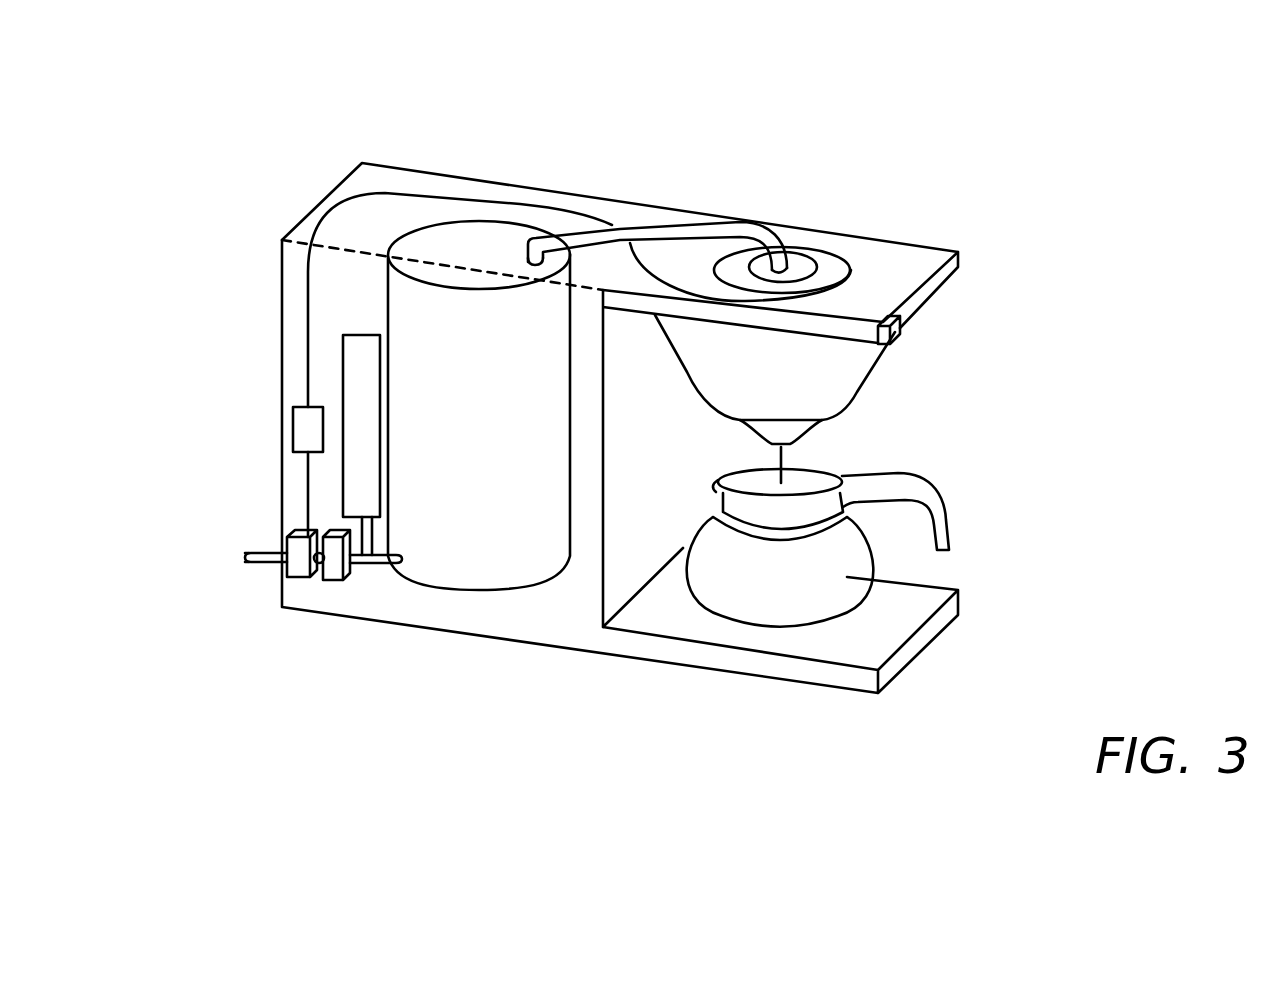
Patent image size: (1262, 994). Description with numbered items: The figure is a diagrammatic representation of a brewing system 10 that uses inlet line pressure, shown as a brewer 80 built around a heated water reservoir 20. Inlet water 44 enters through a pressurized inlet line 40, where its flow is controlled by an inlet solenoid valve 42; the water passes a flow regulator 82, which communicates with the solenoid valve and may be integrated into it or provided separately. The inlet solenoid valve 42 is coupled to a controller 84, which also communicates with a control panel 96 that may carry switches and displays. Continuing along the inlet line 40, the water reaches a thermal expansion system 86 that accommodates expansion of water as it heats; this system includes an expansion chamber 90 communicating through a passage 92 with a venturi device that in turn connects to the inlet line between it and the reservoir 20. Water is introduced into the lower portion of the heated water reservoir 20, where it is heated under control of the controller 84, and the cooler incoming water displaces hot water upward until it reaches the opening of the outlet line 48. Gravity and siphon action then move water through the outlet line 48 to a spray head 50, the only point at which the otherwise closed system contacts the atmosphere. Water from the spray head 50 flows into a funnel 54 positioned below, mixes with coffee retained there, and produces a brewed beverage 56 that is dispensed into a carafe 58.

The brewing system 10 is at (338, 140).
The heated water reservoir 20 is at (408, 327).
The inlet line 40 is at (267, 567).
The inlet solenoid valve 42 is at (330, 580).
The inlet water 44 is at (240, 553).
The outlet line 48 is at (667, 220).
The spray head 50 is at (803, 253).
The funnel 54 is at (738, 278).
The brewed beverage 56 is at (797, 457).
The carafe 58 is at (847, 577).
The brewer 80 is at (257, 393).
The flow regulator 82 is at (295, 568).
The controller 84 is at (293, 413).
The thermal expansion system 86 is at (332, 480).
The expansion chamber 90 is at (343, 365).
The passage 92 is at (342, 537).
The control panel 96 is at (900, 328).